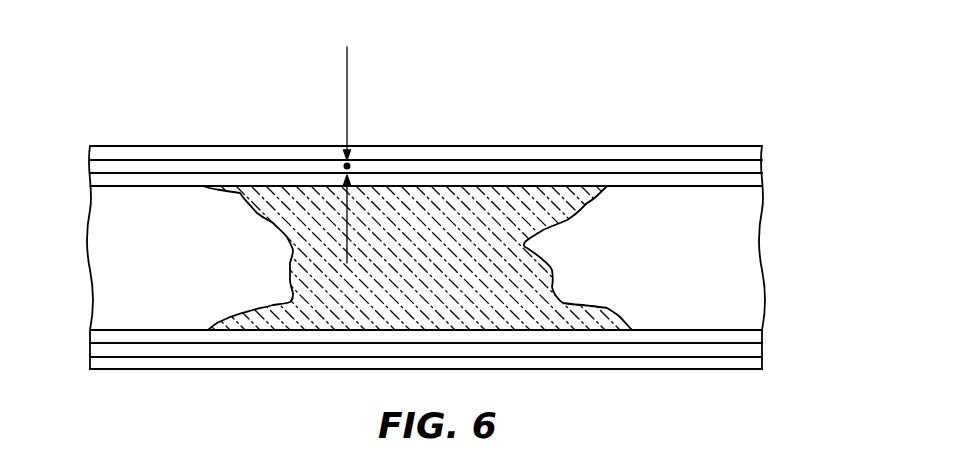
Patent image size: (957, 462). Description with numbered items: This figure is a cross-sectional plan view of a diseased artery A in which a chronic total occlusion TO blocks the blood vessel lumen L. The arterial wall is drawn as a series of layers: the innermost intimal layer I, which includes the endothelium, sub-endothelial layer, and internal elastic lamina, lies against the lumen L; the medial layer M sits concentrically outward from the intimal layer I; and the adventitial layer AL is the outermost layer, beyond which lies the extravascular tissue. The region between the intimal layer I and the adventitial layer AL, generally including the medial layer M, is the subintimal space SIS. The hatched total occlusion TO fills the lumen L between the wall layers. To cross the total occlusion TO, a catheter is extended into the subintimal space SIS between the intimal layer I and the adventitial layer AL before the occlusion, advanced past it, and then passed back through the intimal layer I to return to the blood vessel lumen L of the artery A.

The artery A is at (623, 98).
The adventitial layer AL is at (472, 156).
The medial layer M is at (242, 168).
The subintimal space SIS is at (348, 165).
The intimal layer I is at (155, 180).
The total occlusion TO is at (343, 300).
The blood vessel lumen L is at (687, 315).